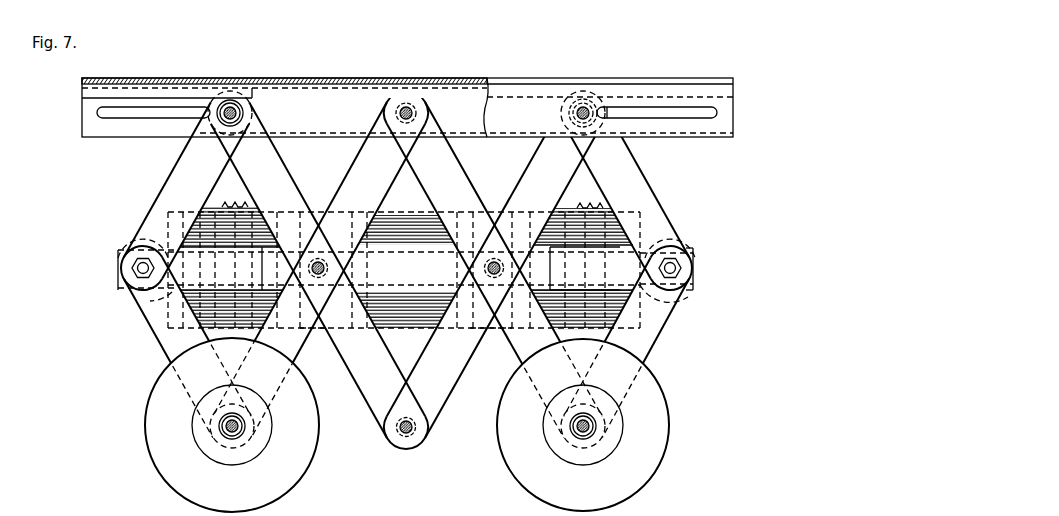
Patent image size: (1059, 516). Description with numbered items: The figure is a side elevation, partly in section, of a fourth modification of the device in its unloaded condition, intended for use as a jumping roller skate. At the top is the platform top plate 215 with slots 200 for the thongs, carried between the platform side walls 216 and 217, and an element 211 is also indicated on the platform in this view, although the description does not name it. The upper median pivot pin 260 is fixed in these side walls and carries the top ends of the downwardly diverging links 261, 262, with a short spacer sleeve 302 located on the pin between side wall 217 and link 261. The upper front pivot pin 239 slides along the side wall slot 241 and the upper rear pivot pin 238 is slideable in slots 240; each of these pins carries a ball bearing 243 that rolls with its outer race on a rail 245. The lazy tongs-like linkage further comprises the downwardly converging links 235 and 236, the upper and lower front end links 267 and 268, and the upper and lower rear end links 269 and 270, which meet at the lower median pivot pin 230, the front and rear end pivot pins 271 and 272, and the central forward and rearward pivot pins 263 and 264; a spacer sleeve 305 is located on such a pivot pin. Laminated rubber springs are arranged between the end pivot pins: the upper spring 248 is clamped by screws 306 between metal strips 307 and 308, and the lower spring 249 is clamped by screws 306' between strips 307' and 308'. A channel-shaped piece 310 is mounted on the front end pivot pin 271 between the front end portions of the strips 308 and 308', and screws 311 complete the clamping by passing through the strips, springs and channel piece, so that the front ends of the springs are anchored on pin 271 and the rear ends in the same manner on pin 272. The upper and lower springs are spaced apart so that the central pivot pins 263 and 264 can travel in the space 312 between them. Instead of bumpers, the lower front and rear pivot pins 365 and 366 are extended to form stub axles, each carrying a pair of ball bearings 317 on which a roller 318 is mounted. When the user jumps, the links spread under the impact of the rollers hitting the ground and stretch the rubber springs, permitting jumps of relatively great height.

The slots 200 is at (148, 79).
The platform top plate 215 is at (318, 78).
The pivot pin 211 is at (381, 80).
The short spacer sleeve 302 is at (410, 102).
The upper rear pivot pin 238 is at (583, 106).
The rail 245 is at (84, 99).
The ball bearing 243 is at (245, 112).
The upper front pivot pin 239 is at (244, 114).
The platform side wall 216 is at (363, 117).
The upper median pivot pin 260 is at (412, 114).
The platform side wall 217 is at (528, 133).
The side wall slot 241 is at (130, 120).
The slots 240 is at (700, 120).
The upper front end link 267 is at (185, 162).
The downwardly converging link 235 is at (280, 166).
The downwardly diverging link 262 is at (460, 168).
The upper rear end link 269 is at (632, 166).
The downwardly diverging link 261 is at (383, 186).
The space 312 is at (418, 218).
The downwardly converging link 236 is at (560, 186).
The upper laminated rubber spring 248 is at (402, 215).
The screws 306 is at (404, 246).
The screws 311 is at (240, 205).
The metal strip 307 is at (440, 252).
The metal strip 308 is at (487, 247).
The channel-shaped piece 310 is at (125, 250).
The front end pivot pin 271 is at (130, 268).
The rear end pivot pin 272 is at (690, 268).
The central forward pivot pin 263 is at (340, 265).
The central rearward pivot pin 264 is at (485, 268).
The spacer sleeve 305 is at (428, 458).
The lower front end link 268 is at (130, 306).
The strip 308' is at (410, 316).
The strip 307' is at (402, 330).
The lower rear end link 270 is at (662, 320).
The screws 306' is at (406, 353).
The lower laminated rubber spring 249 is at (390, 330).
The roller 318 is at (160, 445).
The lower front pivot pin 365 is at (228, 438).
The ball bearing 317 is at (240, 438).
The lower median pivot pin 230 is at (402, 437).
The lower rear pivot pin 366 is at (580, 438).